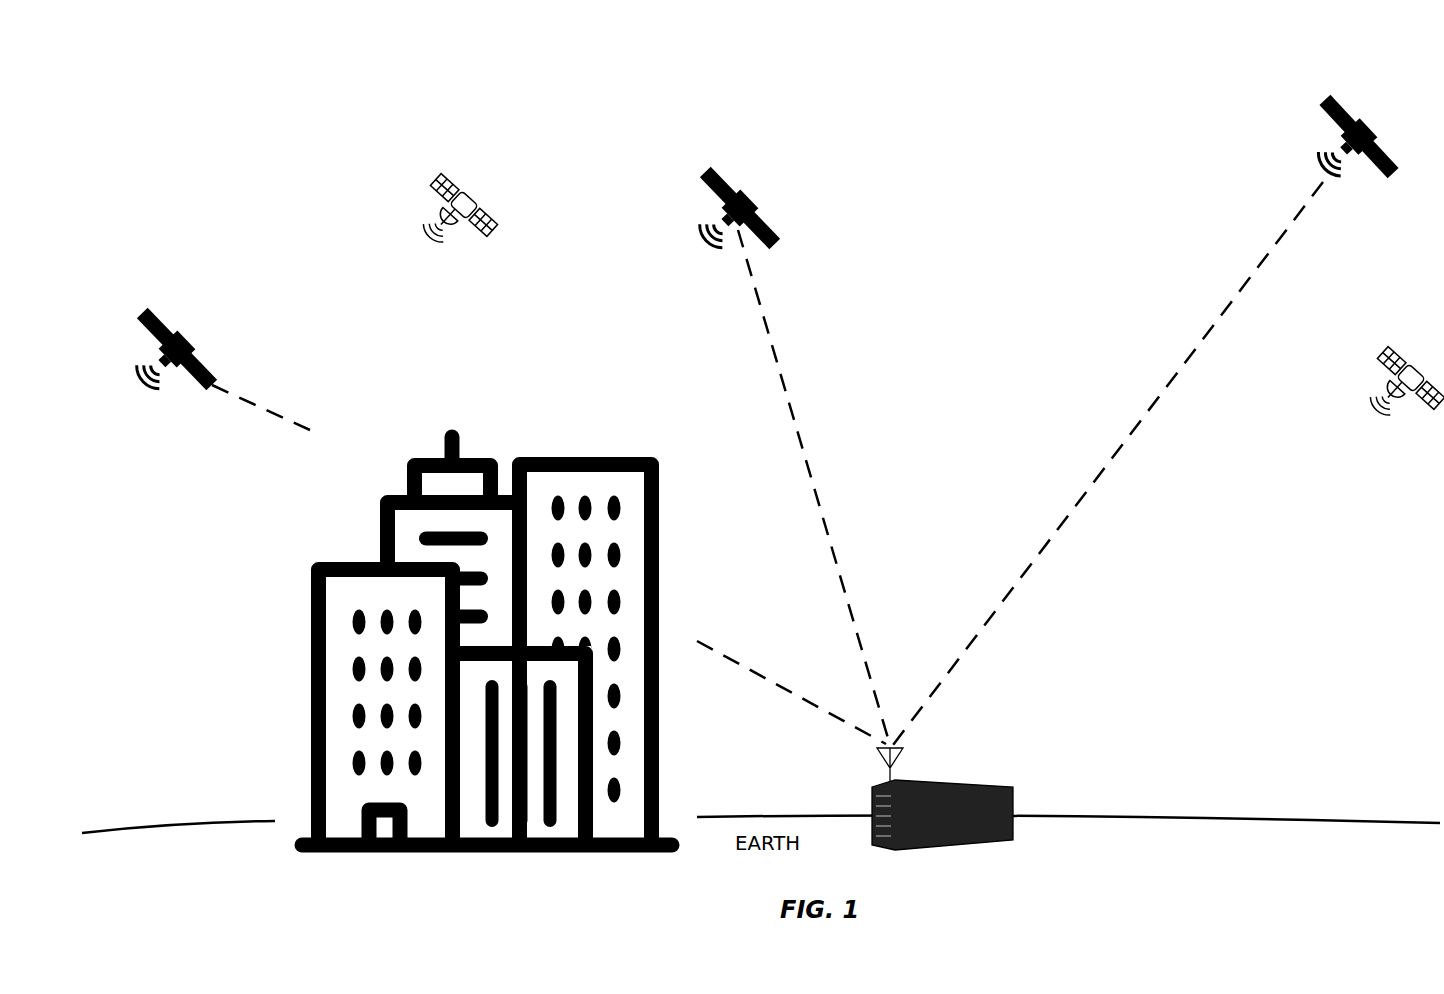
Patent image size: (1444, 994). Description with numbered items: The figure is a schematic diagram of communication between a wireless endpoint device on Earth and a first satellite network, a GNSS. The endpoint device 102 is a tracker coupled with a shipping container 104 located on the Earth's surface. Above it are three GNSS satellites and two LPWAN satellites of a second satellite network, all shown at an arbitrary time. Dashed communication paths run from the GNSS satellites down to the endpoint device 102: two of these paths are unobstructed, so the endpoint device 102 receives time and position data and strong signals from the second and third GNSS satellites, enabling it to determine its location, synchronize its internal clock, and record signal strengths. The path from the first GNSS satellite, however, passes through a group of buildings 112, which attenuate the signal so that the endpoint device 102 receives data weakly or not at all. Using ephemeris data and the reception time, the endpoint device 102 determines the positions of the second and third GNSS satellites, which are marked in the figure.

The endpoint device 102 is at (905, 762).
The shipping container 104 is at (1013, 802).
The buildings 112 is at (519, 435).